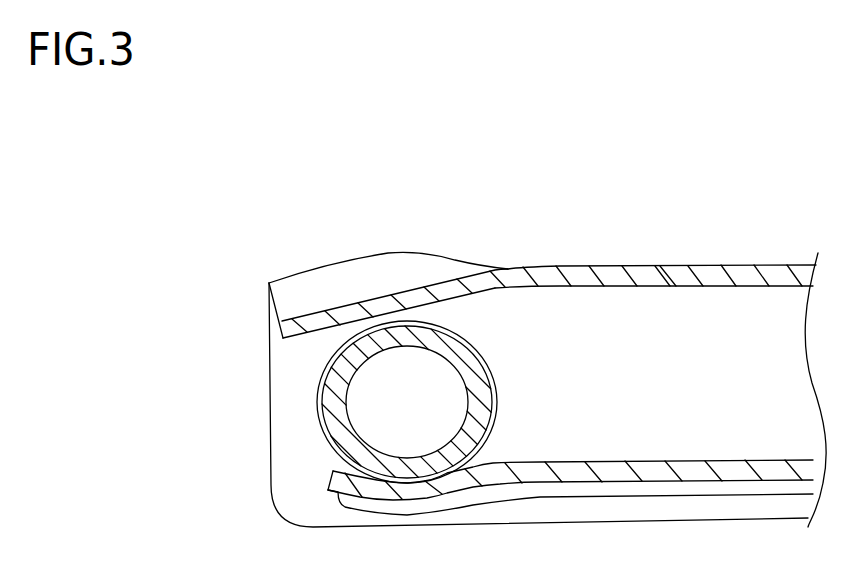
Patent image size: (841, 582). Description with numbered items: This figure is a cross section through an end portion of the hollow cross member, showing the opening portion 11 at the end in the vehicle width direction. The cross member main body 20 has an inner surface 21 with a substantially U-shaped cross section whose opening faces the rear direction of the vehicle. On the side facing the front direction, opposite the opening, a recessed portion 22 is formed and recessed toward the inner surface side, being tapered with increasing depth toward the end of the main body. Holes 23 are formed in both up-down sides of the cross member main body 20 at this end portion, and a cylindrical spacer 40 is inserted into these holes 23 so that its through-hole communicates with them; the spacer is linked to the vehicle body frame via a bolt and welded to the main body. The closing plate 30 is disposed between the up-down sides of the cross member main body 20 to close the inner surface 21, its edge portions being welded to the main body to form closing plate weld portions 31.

The opening portion 11 is at (295, 357).
The cross member main body 20 is at (630, 270).
The inner surface 21 is at (691, 285).
The recessed portion 22 is at (388, 303).
The hole 23 is at (470, 371).
The closing plate 30 is at (694, 475).
The closing plate weld portion 31 is at (643, 487).
The cylindrical spacer 40 is at (332, 415).